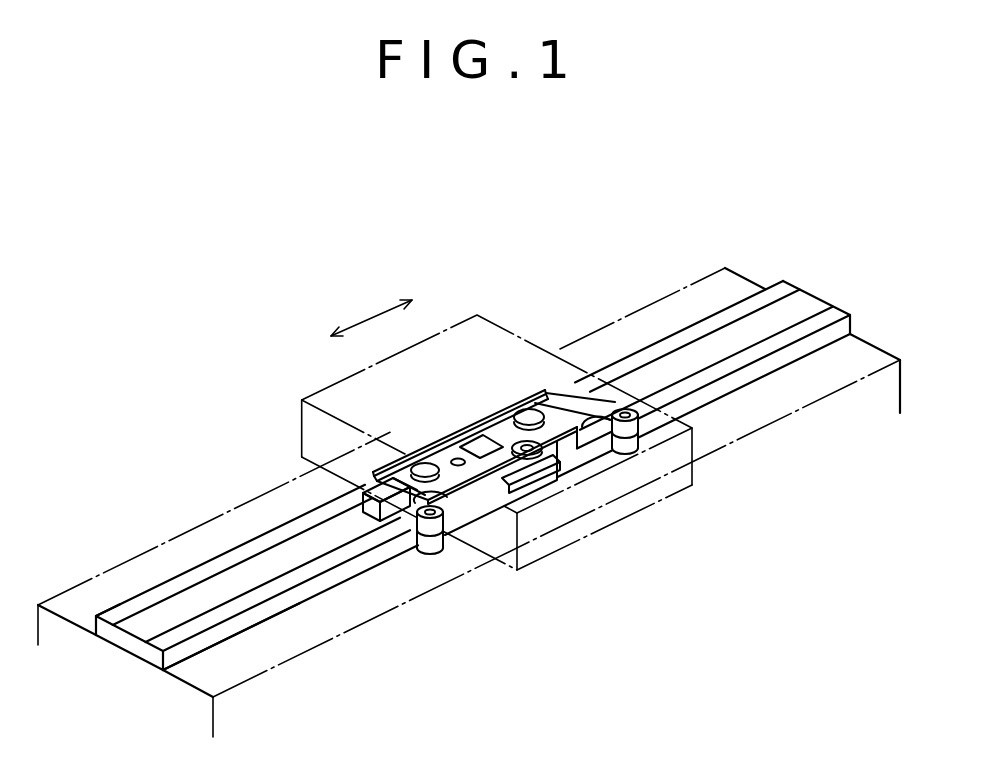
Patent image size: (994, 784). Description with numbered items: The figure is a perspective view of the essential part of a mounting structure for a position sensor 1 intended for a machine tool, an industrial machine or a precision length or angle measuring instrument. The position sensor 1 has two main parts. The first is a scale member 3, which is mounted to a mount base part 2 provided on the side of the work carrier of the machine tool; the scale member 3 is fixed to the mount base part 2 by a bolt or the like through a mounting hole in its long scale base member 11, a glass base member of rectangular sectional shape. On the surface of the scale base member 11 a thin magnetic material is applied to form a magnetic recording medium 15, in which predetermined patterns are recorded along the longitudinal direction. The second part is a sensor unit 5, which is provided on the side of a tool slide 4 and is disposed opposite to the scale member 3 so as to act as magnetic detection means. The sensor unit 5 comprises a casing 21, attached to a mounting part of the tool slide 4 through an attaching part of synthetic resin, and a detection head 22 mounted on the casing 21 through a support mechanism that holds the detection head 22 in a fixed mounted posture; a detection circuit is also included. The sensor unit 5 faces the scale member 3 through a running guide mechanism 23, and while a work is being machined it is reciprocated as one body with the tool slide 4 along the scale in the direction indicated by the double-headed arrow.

The position sensor 1 is at (357, 241).
The mount base part 2 is at (123, 585).
The scale member 3 is at (192, 580).
The tool slide 4 is at (325, 400).
The sensor unit 5 is at (508, 398).
The scale base member 11 is at (180, 637).
The magnetic recording medium 15 is at (131, 627).
The casing 21 is at (508, 475).
The detection head 22 is at (470, 420).
The running guide mechanism 23 is at (376, 523).